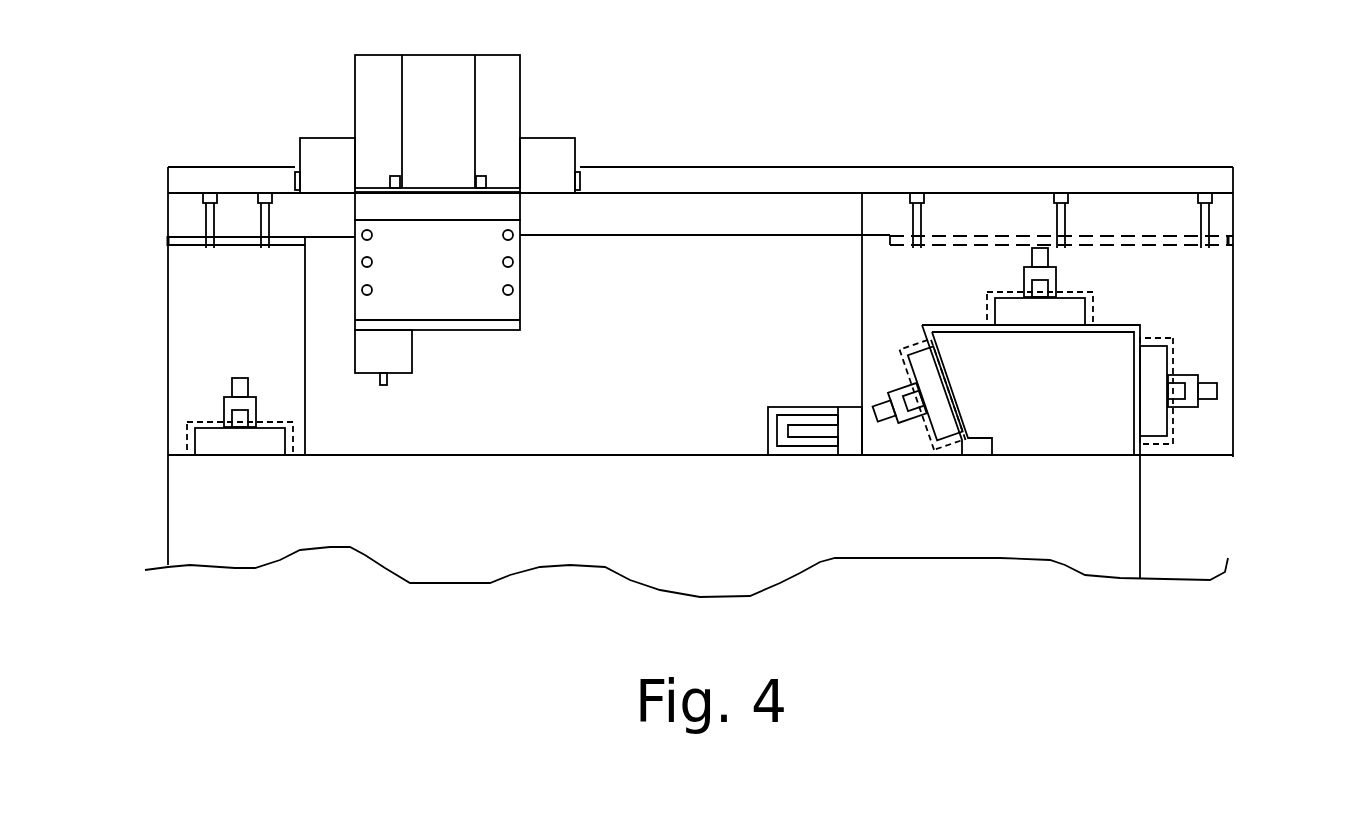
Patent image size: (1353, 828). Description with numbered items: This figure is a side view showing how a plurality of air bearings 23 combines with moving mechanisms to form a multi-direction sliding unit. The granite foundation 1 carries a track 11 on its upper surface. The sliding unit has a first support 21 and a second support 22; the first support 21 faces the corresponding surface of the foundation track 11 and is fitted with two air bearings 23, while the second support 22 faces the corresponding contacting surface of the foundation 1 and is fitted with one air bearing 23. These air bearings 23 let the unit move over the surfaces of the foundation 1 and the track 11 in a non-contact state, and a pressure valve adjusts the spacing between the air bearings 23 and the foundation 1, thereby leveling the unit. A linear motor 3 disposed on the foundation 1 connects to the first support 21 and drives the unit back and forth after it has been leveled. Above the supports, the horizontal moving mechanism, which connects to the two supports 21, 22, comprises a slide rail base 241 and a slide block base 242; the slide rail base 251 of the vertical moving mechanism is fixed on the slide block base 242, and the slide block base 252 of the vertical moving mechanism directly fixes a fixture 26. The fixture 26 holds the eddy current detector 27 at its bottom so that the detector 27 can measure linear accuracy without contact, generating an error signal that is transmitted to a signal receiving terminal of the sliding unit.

The foundation 1 is at (202, 520).
The track 11 is at (1075, 427).
The first support 21 is at (1212, 300).
The second support 22 is at (193, 297).
The air bearing 23 is at (228, 437).
The slide rail base 241 is at (838, 180).
The slide block base 242 is at (320, 157).
The slide rail base 251 is at (497, 102).
The slide block base 252 is at (508, 205).
The fixture 26 is at (483, 292).
The eddy current detector 27 is at (399, 353).
The linear motor 3 is at (770, 430).